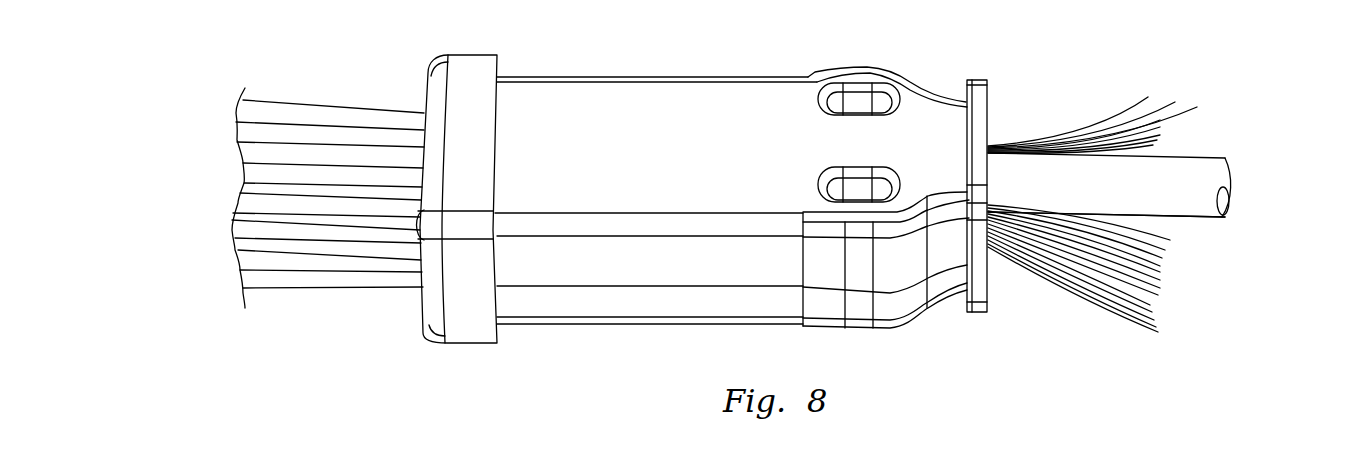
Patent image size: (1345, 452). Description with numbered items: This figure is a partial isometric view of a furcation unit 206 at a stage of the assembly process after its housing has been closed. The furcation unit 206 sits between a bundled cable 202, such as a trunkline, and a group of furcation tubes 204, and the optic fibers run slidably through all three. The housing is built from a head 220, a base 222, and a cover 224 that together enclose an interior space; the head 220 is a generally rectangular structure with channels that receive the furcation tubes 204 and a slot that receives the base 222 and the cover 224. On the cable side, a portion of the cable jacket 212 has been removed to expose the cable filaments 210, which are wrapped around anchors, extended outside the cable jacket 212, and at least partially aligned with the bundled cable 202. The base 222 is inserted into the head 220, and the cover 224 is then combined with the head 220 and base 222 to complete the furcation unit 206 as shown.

The bundled cable 202 is at (1215, 137).
The furcation tubes 204 is at (208, 300).
The furcation unit 206 is at (625, 303).
The cable filaments 210 is at (1108, 112).
The cable jacket 212 is at (1170, 208).
The head 220 is at (433, 320).
The base 222 is at (718, 303).
The cover 224 is at (713, 77).